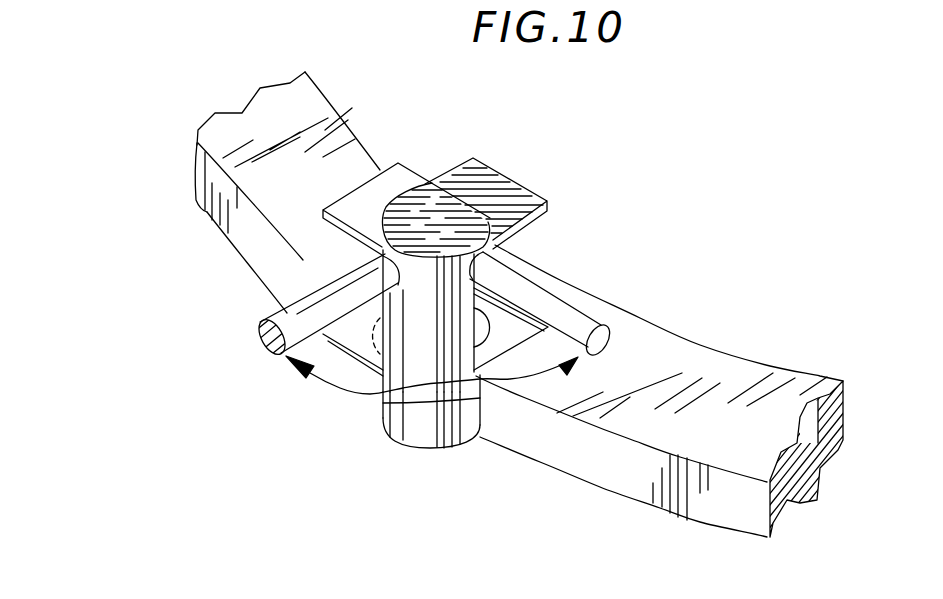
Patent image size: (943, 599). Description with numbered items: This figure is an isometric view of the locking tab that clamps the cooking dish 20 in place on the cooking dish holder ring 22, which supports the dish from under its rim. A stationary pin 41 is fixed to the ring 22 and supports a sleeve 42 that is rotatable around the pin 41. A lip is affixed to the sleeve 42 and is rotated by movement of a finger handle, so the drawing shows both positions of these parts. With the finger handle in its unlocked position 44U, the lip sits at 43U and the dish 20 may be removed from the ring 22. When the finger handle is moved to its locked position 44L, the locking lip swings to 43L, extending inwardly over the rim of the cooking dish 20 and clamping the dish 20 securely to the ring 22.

The cooking dish 20 is at (355, 93).
The cooking dish holder ring 22 is at (283, 200).
The stationary pin 41 is at (427, 428).
The sleeve 42 is at (425, 373).
The lip in unlocked position 43U is at (381, 193).
The lip in locked position 43L is at (500, 195).
The finger handle in locked position 44L is at (285, 308).
The finger handle in unlocked position 44U is at (577, 315).